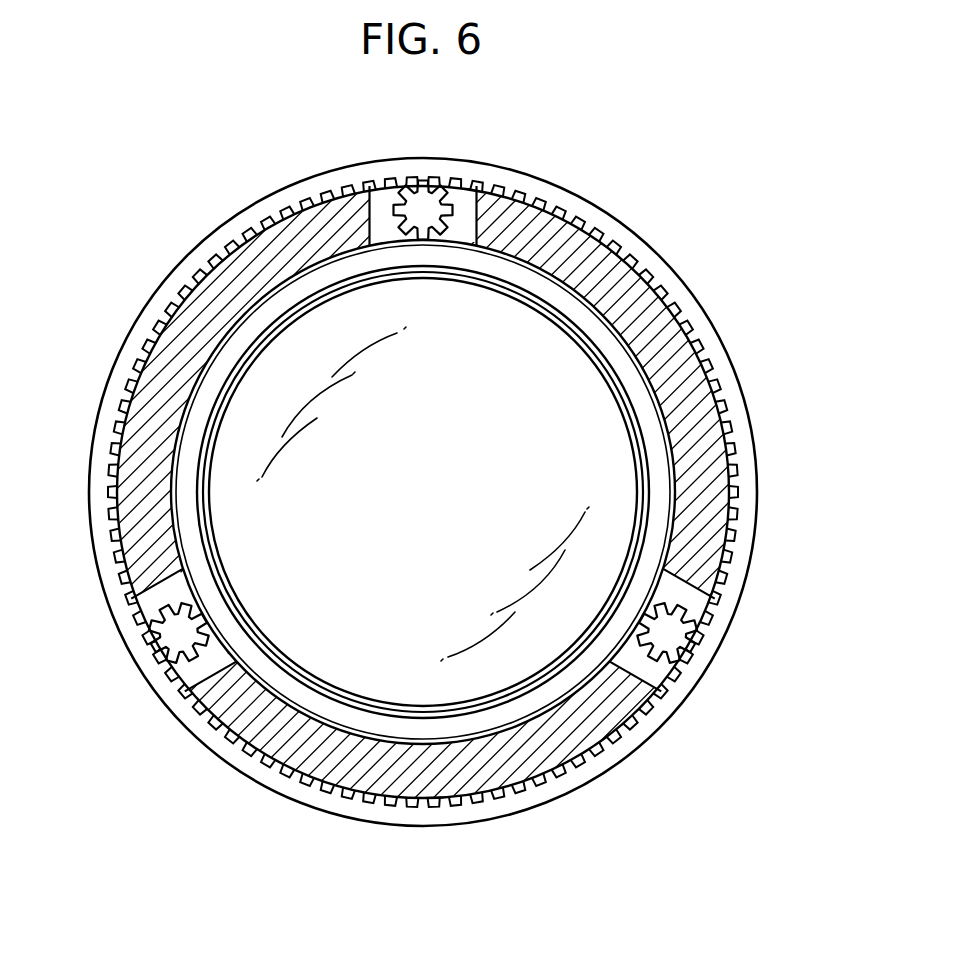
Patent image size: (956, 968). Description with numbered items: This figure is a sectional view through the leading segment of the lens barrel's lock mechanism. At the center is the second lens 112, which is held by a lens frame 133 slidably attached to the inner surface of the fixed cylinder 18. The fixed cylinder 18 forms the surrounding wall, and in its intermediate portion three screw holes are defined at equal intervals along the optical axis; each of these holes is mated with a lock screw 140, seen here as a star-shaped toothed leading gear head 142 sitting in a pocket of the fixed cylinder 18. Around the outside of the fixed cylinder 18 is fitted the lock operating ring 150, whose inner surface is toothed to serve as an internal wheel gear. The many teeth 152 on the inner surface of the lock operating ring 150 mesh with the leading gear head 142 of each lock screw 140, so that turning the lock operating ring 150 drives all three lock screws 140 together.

The fixed cylinder 18 is at (261, 268).
The second lens 112 is at (238, 485).
The lens frame 133 is at (193, 558).
The lock screw 140 is at (420, 208).
The toothed leading gear head 142 is at (452, 186).
The lock operating ring 150 is at (747, 460).
The teeth 152 is at (673, 300).